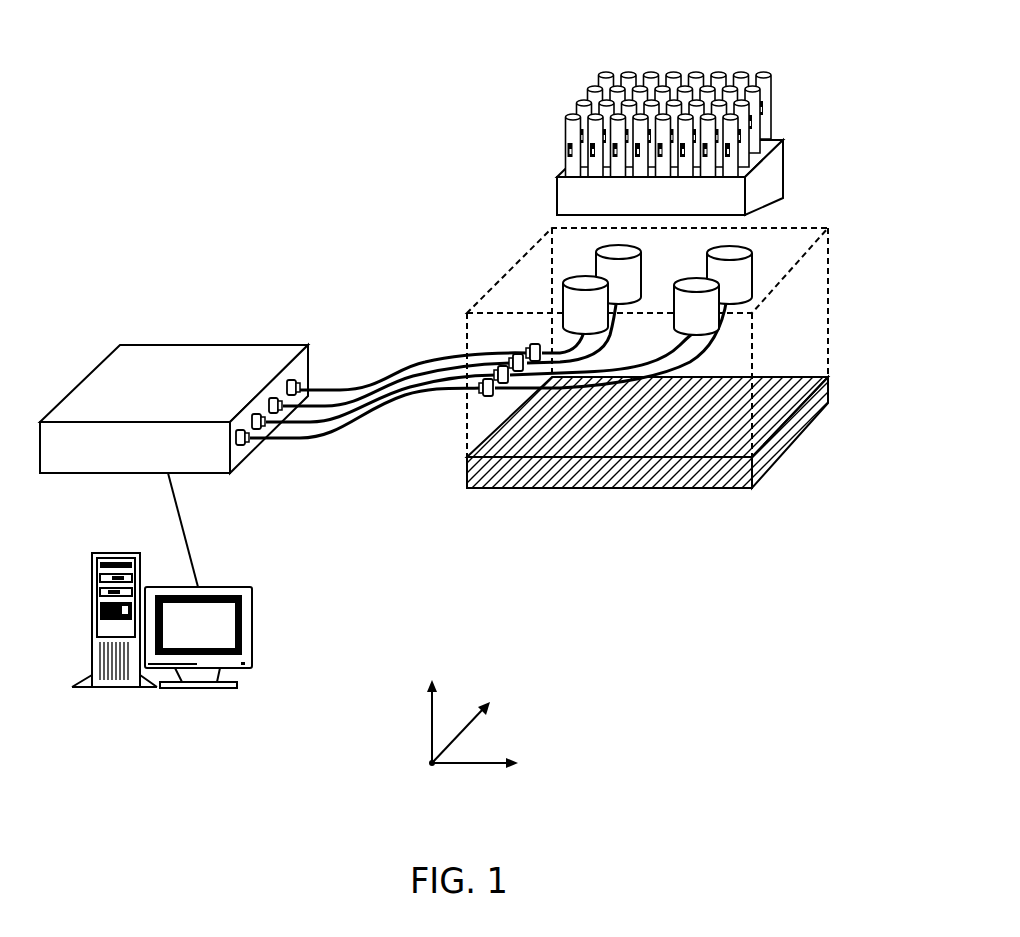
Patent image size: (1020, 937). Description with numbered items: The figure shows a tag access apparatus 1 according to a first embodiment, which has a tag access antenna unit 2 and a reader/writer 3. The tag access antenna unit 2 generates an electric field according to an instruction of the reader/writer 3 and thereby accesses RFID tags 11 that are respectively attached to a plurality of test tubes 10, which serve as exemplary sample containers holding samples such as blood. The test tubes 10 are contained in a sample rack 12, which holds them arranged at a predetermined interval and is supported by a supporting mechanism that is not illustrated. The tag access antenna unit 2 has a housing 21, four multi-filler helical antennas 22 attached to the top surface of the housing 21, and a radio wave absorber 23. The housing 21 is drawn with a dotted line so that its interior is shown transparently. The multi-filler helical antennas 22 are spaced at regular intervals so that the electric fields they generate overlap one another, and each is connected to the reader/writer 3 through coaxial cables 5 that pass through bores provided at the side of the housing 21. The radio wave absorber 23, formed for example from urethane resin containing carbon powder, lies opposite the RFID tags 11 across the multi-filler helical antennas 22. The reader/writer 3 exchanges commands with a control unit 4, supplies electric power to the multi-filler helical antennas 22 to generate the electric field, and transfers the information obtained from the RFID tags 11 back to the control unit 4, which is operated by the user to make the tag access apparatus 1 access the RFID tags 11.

The tag access apparatus 1 is at (242, 106).
The tag access antenna unit 2 is at (658, 498).
The reader/writer 3 is at (158, 345).
The control unit 4 is at (253, 637).
The coaxial cables 5 is at (373, 375).
The test tube 10 is at (578, 112).
The RFID tag 11 is at (568, 150).
The sample rack 12 is at (557, 196).
The housing 21 is at (728, 488).
The multi-filler helical antenna 22 is at (607, 248).
The radio wave absorber 23 is at (490, 478).